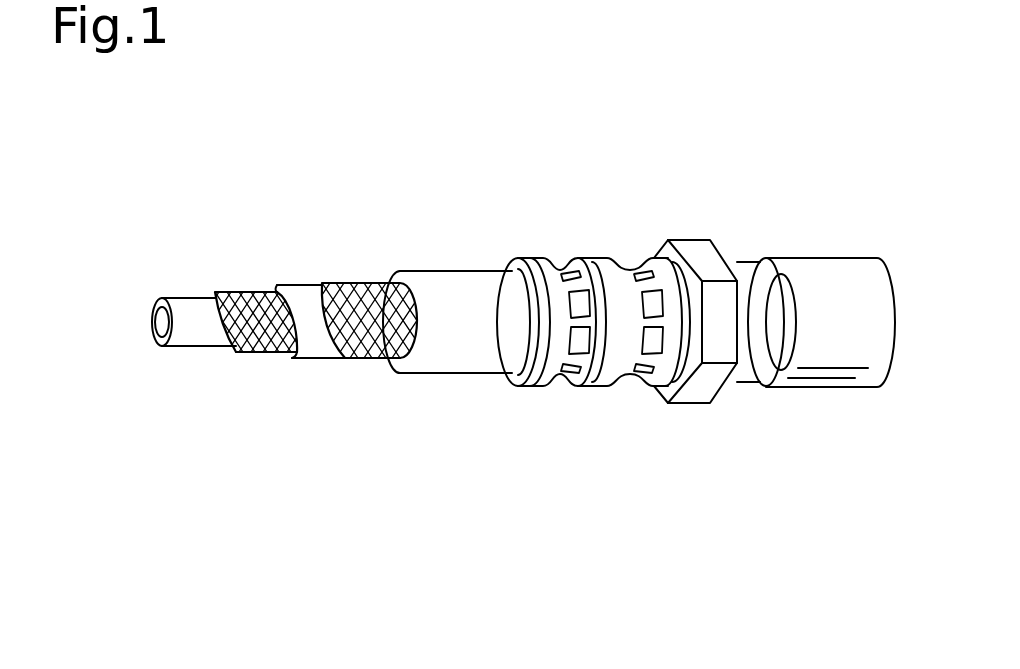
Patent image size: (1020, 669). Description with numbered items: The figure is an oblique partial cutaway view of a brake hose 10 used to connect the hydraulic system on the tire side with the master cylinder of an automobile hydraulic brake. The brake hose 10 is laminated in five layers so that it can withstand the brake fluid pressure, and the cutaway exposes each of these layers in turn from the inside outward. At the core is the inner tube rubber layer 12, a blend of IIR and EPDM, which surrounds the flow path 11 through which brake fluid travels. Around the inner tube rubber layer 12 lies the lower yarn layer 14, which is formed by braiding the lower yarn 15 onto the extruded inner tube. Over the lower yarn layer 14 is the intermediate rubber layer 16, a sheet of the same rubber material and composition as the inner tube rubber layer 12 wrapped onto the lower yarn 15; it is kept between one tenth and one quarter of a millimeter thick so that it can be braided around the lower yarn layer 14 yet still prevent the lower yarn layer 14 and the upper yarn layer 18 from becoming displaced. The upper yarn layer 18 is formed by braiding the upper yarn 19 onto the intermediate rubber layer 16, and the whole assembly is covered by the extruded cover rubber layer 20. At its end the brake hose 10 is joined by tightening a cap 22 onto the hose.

The brake hose 10 is at (597, 160).
The flow path 11 is at (150, 328).
The inner tube rubber layer 12 is at (192, 307).
The lower yarn layer 14 is at (255, 297).
The lower yarn 15 is at (253, 340).
The intermediate rubber layer 16 is at (302, 288).
The upper yarn layer 18 is at (370, 278).
The upper yarn 19 is at (355, 360).
The cover rubber layer 20 is at (453, 278).
The cap 22 is at (830, 256).